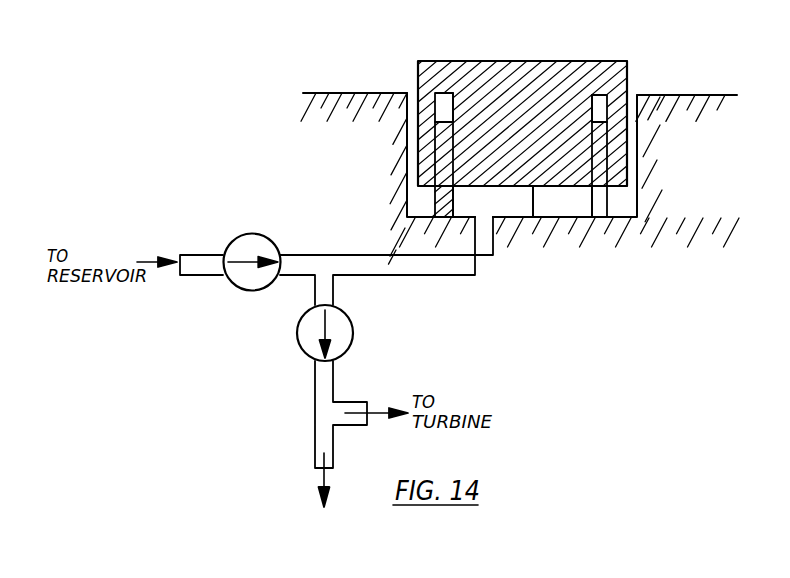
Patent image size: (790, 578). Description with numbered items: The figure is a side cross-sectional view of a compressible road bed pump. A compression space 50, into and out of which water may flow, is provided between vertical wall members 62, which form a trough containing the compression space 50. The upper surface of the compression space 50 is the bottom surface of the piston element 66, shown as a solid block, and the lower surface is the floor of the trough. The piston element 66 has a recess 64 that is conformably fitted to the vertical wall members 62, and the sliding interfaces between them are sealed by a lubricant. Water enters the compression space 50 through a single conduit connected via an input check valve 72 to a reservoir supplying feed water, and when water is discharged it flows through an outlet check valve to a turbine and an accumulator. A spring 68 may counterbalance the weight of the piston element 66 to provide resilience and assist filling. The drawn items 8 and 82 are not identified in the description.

The compression space 50 is at (496, 213).
The passage 8 is at (554, 205).
The vertical wall members 62 is at (629, 95).
The recess 64 is at (444, 93).
The piston element 66 is at (583, 72).
The spring 68 is at (534, 200).
The input check valve 72 is at (255, 253).
The shoulder 82 is at (626, 61).